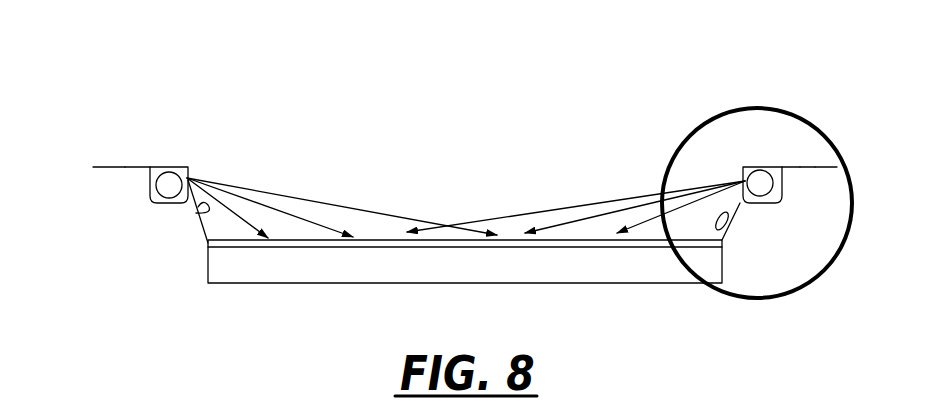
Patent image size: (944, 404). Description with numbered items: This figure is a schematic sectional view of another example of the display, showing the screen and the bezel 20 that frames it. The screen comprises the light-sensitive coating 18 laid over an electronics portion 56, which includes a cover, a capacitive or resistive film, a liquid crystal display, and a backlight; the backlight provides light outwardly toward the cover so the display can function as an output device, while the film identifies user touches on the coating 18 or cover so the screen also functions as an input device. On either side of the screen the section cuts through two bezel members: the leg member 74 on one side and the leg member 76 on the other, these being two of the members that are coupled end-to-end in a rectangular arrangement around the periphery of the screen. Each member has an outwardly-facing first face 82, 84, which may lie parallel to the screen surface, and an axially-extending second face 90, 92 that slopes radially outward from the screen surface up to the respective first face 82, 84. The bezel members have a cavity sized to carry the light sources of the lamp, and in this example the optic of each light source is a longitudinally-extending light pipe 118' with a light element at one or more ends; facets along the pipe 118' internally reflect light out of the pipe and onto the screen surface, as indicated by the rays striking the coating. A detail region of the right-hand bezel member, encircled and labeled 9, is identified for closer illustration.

The fourth or leg member 74 is at (102, 160).
The first or outwardly-facing face 82 is at (125, 166).
The second or axially-extending face 90 is at (204, 211).
The light-sensitive coating 18 is at (208, 245).
The electronics portion 56 is at (218, 263).
The light pipe 118' is at (709, 141).
The second or axially-extending face 92 is at (729, 230).
The second or leg member 76 is at (787, 158).
The bezel 20 is at (798, 159).
The first or outwardly-facing face 84 is at (815, 167).
The detail view callout (FIG. 9) 9 is at (800, 121).